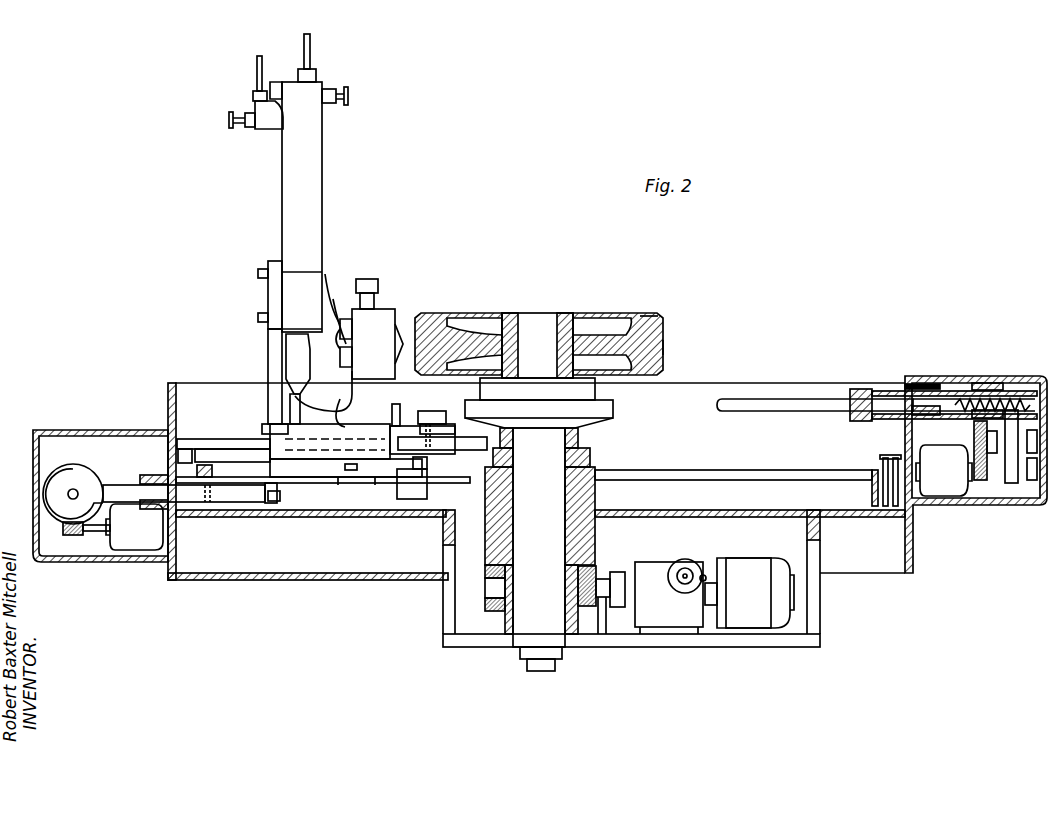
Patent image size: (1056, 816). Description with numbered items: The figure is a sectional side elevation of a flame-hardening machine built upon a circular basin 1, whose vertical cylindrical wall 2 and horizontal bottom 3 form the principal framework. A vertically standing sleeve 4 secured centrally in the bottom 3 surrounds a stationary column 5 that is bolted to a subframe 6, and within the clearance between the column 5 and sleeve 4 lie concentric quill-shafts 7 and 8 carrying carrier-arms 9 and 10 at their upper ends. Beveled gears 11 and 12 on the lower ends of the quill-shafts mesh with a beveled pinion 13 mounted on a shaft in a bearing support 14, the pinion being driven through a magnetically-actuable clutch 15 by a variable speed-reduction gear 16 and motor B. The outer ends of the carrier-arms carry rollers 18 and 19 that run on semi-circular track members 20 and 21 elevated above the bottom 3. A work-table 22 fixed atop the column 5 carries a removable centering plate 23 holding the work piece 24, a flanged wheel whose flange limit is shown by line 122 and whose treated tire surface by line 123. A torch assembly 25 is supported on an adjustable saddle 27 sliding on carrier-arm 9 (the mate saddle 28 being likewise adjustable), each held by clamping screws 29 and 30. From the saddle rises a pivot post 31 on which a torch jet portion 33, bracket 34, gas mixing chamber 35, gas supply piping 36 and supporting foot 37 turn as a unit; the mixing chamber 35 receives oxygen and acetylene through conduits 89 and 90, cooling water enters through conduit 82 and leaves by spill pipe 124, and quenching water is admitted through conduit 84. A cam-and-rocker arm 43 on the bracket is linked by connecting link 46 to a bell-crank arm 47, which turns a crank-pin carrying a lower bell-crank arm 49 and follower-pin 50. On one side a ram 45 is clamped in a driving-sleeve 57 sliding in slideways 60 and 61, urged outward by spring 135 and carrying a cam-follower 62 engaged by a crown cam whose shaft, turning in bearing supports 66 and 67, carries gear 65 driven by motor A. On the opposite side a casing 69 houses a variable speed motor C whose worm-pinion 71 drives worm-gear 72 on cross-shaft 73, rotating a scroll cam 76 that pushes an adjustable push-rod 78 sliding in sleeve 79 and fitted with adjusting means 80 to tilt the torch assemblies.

The circular basin 1 is at (755, 383).
The vertical cylindrical wall 2 is at (710, 383).
The horizontal bottom 3 is at (296, 519).
The sleeve 4 is at (596, 490).
The stationary column 5 is at (525, 600).
The subframe 6 is at (708, 647).
The quill-shaft 7 is at (578, 440).
The quill-shaft 8 is at (590, 456).
The carrier-arm 9 is at (205, 439).
The carrier-arm 10 is at (230, 457).
The beveled gear 11 is at (485, 604).
The beveled gear 12 is at (485, 572).
The beveled pinion 13 is at (600, 570).
The bearing support 14 is at (615, 610).
The magnetically-actuable clutch 15 is at (622, 572).
The variable speed-reduction gear 16 is at (665, 562).
The roller 18 is at (185, 449).
The roller 19 is at (204, 465).
The semi-circular track member 20 is at (770, 470).
The semi-circular track member 21 is at (886, 455).
The work-table 22 is at (613, 410).
The centering plate 23 is at (538, 318).
The work piece 24 is at (640, 316).
The flame-hardening torch assembly 25 is at (336, 205).
The adjustable saddle 27 is at (330, 481).
The adjustable saddle 28 is at (340, 485).
The clamping screw 29 is at (375, 485).
The clamping screw 30 is at (352, 471).
The pivot post 31 is at (368, 281).
The torch jet portion 33 is at (400, 324).
The bracket 34 is at (330, 284).
The gas mixing chamber 35 is at (282, 187).
The gas supply piping 36 is at (290, 349).
The supporting foot 37 is at (270, 365).
The combined cam-and-rocker arm 43 is at (396, 409).
The ram 45 is at (795, 399).
The connecting link 46 is at (430, 411).
The bell-crank arm 47 is at (448, 419).
The bell-crank arm 49 is at (426, 499).
The follower-pin 50 is at (420, 499).
The driving-sleeve 57 is at (862, 389).
The slideway 60 is at (1042, 376).
The slideway 61 is at (930, 384).
The cam-follower 62 is at (985, 383).
The gear 65 is at (974, 435).
The bearing support 66 is at (1010, 483).
The bearing support 67 is at (990, 473).
The casing 69 is at (33, 444).
The worm-pinion 71 is at (70, 535).
The worm-gear 72 is at (92, 467).
The horizontal cross-shaft 73 is at (68, 494).
The scroll cam 76 is at (72, 467).
The adjustable push-rod 78 is at (125, 485).
The sleeve 79 is at (150, 475).
The adjusting means 80 is at (272, 501).
The cooling water conduit 82 is at (350, 344).
The quenching fluid conduit 84 is at (342, 309).
The gas conduit 89 is at (258, 69).
The gas conduit 90 is at (312, 51).
The outer limit of the flange 122 is at (660, 320).
The wearing surface of the tire 123 is at (664, 345).
The spill pipe 124 is at (340, 397).
The spring 135 is at (1005, 396).
The driving motor A is at (944, 470).
The motor B is at (749, 593).
The variable speed motor C is at (134, 527).